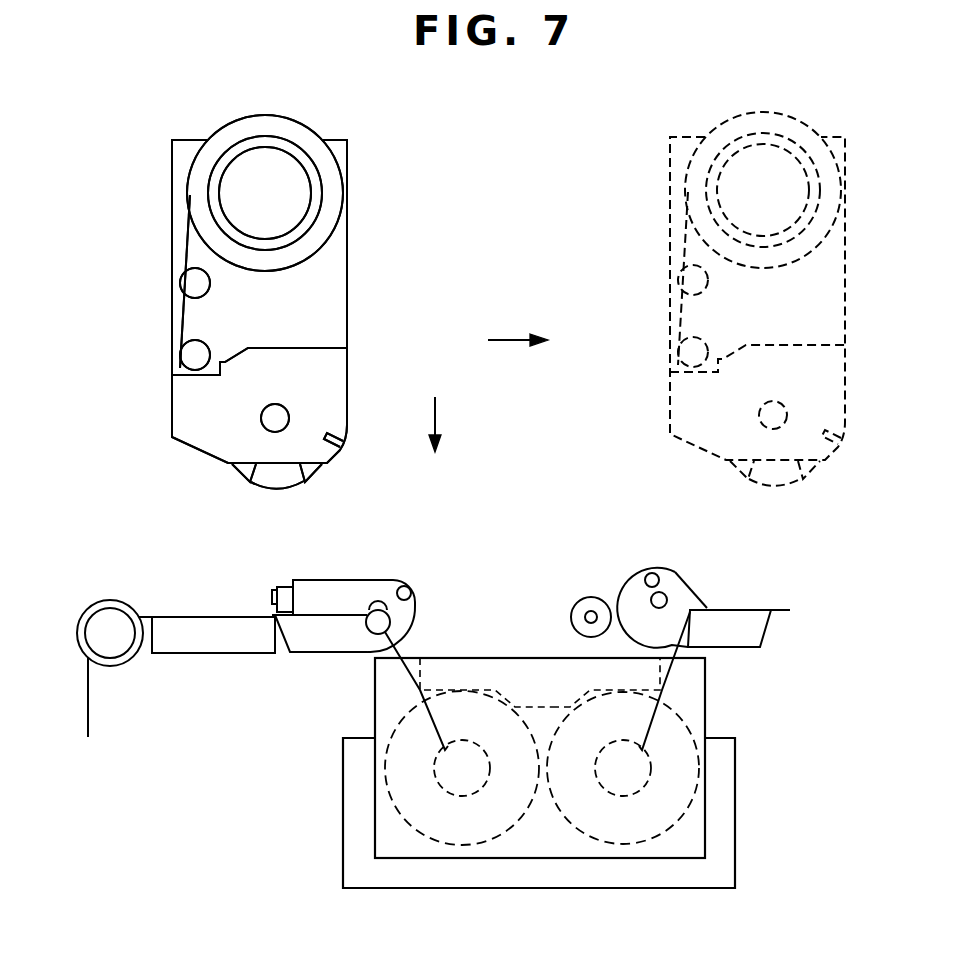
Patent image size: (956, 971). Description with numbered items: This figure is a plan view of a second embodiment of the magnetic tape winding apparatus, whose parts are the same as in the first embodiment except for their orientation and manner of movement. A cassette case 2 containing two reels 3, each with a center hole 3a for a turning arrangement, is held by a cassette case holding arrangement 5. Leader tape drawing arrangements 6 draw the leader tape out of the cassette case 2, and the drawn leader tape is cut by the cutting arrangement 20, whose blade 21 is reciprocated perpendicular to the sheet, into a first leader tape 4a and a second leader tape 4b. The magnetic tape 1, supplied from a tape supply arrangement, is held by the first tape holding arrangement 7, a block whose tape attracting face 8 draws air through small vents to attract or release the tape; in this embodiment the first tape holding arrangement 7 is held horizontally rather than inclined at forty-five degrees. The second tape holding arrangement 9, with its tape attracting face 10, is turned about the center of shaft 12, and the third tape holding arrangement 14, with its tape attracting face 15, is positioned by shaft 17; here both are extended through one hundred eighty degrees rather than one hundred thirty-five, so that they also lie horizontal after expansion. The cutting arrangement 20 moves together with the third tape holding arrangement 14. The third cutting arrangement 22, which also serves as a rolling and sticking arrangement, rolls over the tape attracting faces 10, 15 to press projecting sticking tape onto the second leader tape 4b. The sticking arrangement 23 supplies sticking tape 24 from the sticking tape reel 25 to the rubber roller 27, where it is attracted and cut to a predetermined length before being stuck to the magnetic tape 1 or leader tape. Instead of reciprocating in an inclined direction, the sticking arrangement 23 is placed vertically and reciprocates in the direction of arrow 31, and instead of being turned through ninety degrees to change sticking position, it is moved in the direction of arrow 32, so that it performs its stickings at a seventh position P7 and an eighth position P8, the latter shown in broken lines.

The magnetic tape 1 is at (88, 710).
The cassette case 2 is at (413, 852).
The reel 3 is at (405, 818).
The center hole 3a is at (437, 775).
The first leader tape 4a is at (418, 696).
The second leader tape 4b is at (660, 702).
The cassette case holding arrangement 5 is at (577, 870).
The leader tape drawing arrangement 6 is at (411, 590).
The first tape holding arrangement 7 is at (207, 645).
The tape attracting face 8 is at (193, 617).
The second tape holding arrangement 9 is at (756, 637).
The tape attracting face 10 is at (722, 610).
The shaft 12 is at (667, 596).
The third tape holding arrangement 14 is at (330, 636).
The tape attracting face 15 is at (331, 612).
The shaft 17 is at (378, 603).
The cutting arrangement 20 is at (284, 590).
The blade 21 is at (272, 605).
The third cutting arrangement 22 is at (571, 617).
The sticking arrangement 23 is at (166, 172).
The sticking tape 24 is at (181, 246).
The sticking tape reel 25 is at (263, 115).
The rubber roller 27 is at (277, 479).
The arrow 31 is at (436, 421).
The arrow 32 is at (511, 340).
The seventh position P7 is at (185, 415).
The eighth position P8 is at (672, 400).